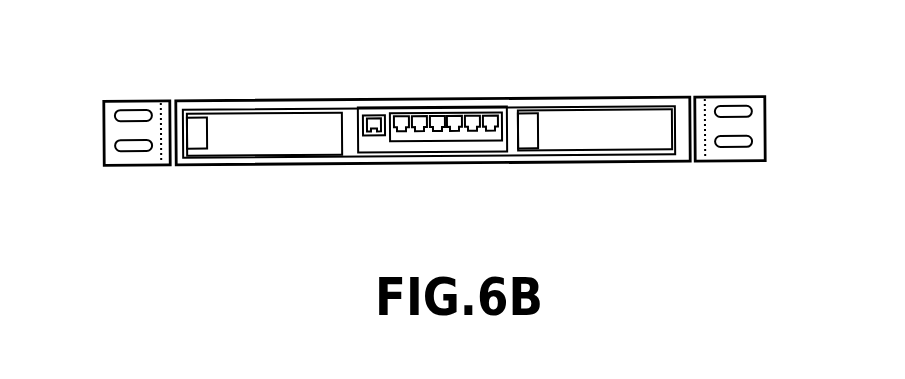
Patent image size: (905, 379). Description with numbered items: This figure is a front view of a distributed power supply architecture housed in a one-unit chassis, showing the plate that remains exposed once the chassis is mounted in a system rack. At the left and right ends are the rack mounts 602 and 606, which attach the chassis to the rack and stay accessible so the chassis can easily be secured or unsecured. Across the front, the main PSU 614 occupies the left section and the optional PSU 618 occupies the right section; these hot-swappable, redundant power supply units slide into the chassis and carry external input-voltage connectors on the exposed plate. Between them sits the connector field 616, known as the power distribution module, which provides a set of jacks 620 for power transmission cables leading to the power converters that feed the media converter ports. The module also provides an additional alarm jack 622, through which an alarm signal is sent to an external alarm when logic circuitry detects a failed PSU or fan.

The rack mount 602 is at (117, 101).
The rack mount 606 is at (741, 97).
The main PSU 614 is at (242, 118).
The optional PSU 618 is at (650, 113).
The RJ-45 connector field 616 is at (496, 152).
The jacks 620 is at (444, 134).
The alarm jack 622 is at (362, 128).